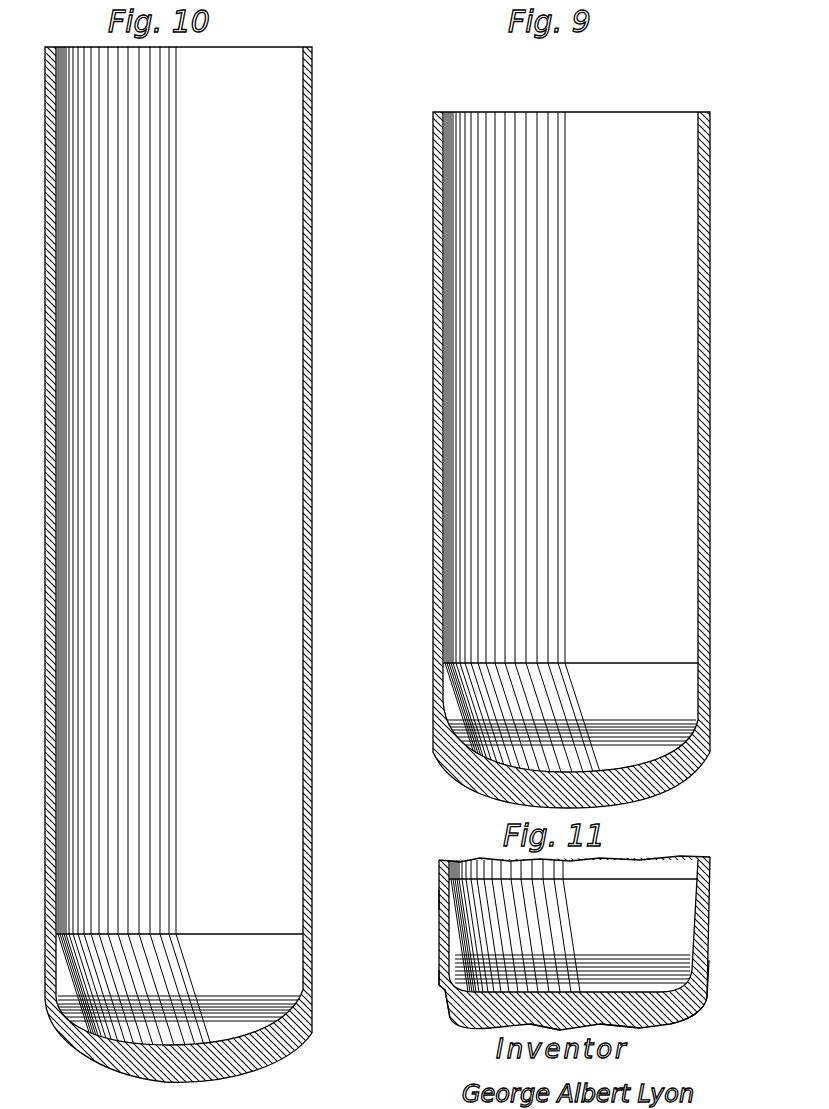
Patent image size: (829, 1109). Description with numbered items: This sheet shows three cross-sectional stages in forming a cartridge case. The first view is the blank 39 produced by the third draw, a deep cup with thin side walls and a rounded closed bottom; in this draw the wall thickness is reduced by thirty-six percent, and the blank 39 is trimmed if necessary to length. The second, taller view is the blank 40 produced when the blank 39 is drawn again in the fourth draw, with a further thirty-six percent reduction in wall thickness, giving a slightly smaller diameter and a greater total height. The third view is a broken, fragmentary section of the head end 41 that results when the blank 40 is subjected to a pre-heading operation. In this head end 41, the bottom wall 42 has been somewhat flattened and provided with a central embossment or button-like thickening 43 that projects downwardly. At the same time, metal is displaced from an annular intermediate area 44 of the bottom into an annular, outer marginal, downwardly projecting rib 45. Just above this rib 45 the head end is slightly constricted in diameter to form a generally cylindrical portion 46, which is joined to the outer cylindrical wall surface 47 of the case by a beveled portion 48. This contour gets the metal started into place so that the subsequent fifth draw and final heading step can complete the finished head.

In FIG. 9, the blank 39 is at (712, 521).
In FIG. 10, the blank 40 is at (314, 548).
In FIG. 11, the head end 41 is at (711, 932).
In FIG. 11, the bottom wall 42 is at (698, 1000).
In FIG. 11, the central embossment or button-like thickening 43 is at (570, 1026).
In FIG. 11, the annular intermediate area 44 is at (635, 1027).
In FIG. 11, the annular outer marginal downwardly projecting rib 45 is at (688, 1020).
In FIG. 11, the generally cylindrical portion 46 is at (448, 993).
In FIG. 11, the outer cylindrical wall surface 47 is at (439, 900).
In FIG. 11, the beveled portion 48 is at (445, 978).